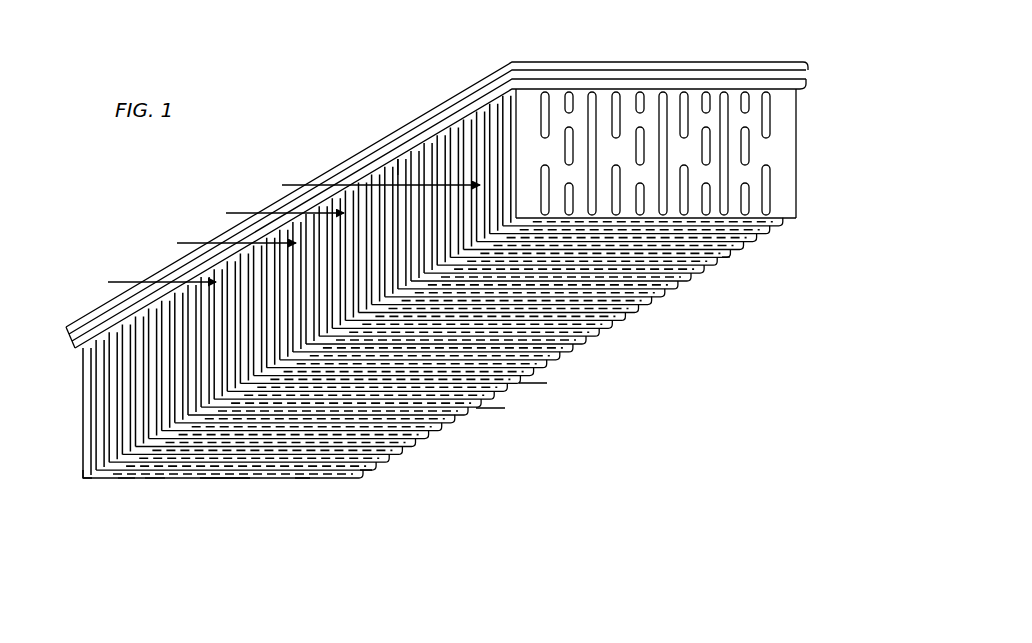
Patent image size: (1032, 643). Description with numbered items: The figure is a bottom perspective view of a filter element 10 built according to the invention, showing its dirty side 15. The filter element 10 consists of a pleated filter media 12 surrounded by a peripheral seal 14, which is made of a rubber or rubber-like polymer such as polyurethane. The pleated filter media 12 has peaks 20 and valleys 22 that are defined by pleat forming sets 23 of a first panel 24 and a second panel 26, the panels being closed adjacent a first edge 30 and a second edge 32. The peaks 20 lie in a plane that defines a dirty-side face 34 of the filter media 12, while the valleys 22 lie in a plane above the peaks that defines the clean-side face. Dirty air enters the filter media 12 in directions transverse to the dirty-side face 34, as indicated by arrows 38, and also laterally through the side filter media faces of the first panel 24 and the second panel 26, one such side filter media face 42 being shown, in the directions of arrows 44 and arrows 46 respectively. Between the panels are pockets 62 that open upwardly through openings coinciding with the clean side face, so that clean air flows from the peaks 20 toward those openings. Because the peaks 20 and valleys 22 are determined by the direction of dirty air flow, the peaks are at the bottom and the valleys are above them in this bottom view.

The filter element 10 is at (763, 57).
The pleated filter media 12 is at (787, 212).
The peripheral seal 14 is at (631, 62).
The dirty side 15 is at (730, 259).
The peaks 20 is at (603, 307).
The valleys 22 is at (486, 120).
The pleat forming sets 23 is at (799, 163).
The first panel 24 is at (657, 197).
The second panel 26 is at (404, 151).
The first edge 30 is at (796, 193).
The second edge 32 is at (437, 176).
The dirty-side face 34 is at (153, 484).
The arrows 38 is at (370, 471).
The side filter media face 42 is at (92, 478).
The arrows 44 is at (282, 185).
The arrows 46 is at (520, 383).
The pockets 62 is at (125, 463).